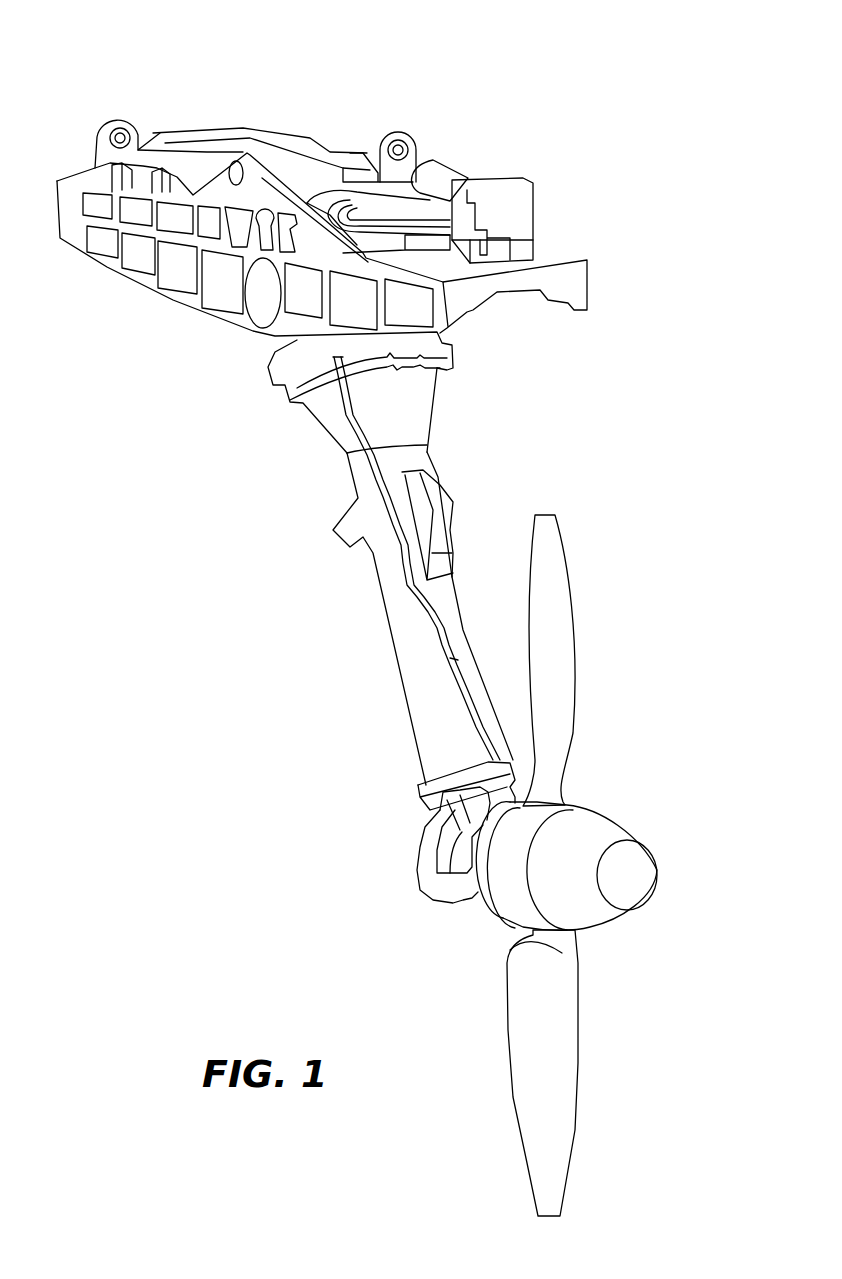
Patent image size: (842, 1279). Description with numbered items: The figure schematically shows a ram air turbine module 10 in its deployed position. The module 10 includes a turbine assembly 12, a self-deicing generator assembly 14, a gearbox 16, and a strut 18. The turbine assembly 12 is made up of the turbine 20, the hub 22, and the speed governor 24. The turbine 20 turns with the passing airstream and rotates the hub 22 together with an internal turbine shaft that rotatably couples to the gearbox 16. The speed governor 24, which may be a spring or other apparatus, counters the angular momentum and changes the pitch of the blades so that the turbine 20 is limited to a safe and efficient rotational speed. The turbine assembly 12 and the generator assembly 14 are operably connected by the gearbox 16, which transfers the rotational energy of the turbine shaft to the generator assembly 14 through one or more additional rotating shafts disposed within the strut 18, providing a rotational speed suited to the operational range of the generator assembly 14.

The ram air turbine module 10 is at (648, 102).
The turbine assembly 12 is at (674, 808).
The self-deicing generator assembly 14 is at (452, 397).
The gearbox 16 is at (428, 852).
The strut 18 is at (393, 618).
The turbine 20 is at (560, 605).
The hub 22 is at (590, 795).
The speed governor 24 is at (588, 915).